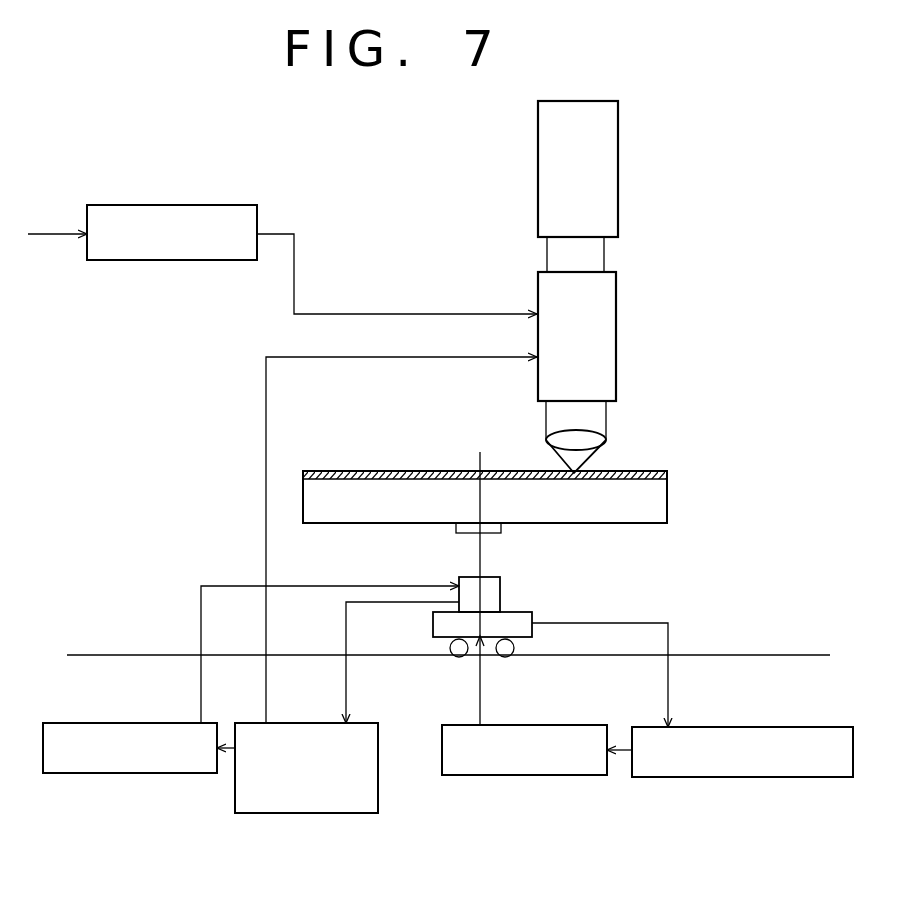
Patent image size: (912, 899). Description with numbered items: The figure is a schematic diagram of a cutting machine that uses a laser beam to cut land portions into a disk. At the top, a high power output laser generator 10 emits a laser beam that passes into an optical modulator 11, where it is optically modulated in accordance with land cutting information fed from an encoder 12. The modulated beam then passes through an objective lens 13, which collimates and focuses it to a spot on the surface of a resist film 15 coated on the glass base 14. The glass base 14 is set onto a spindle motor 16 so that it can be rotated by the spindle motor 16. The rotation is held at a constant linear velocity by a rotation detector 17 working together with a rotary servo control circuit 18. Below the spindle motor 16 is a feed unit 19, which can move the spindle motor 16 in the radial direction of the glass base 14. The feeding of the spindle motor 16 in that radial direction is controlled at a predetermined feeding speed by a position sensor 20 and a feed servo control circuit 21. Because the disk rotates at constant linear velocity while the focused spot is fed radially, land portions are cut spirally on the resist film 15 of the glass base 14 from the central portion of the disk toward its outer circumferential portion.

The laser generator 10 is at (608, 181).
The optical modulator 11 is at (608, 331).
The encoder 12 is at (178, 205).
The objective lens 13 is at (588, 436).
The glass base 14 is at (660, 507).
The resist film 15 is at (662, 474).
The spindle motor 16 is at (490, 593).
The rotation detector 17 is at (333, 810).
The rotary servo control circuit 18 is at (148, 766).
The feed unit 19 is at (520, 618).
The position sensor 20 is at (733, 773).
The feed servo control circuit 21 is at (545, 770).